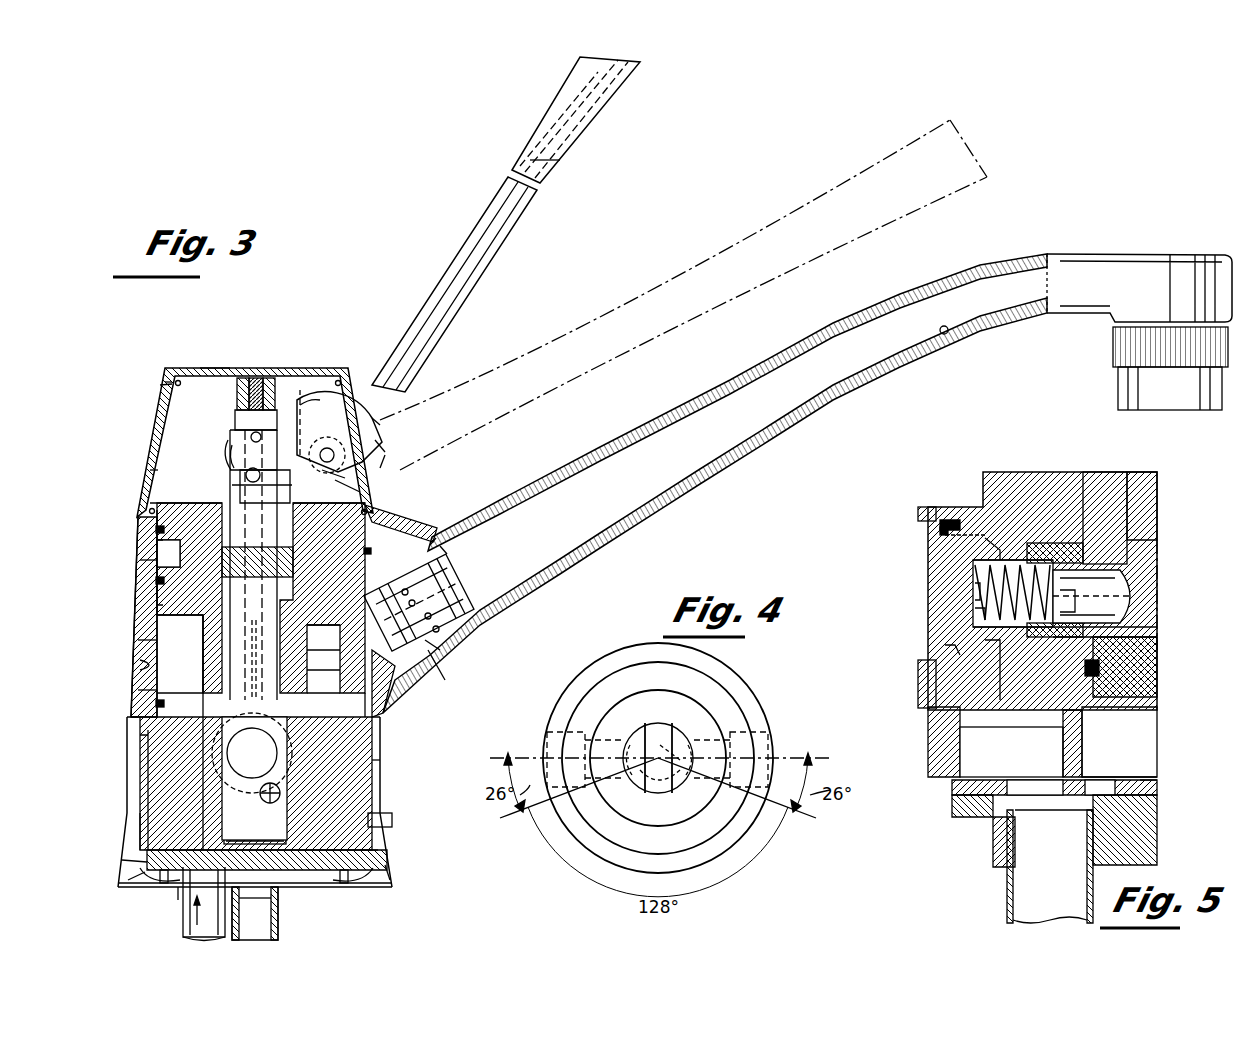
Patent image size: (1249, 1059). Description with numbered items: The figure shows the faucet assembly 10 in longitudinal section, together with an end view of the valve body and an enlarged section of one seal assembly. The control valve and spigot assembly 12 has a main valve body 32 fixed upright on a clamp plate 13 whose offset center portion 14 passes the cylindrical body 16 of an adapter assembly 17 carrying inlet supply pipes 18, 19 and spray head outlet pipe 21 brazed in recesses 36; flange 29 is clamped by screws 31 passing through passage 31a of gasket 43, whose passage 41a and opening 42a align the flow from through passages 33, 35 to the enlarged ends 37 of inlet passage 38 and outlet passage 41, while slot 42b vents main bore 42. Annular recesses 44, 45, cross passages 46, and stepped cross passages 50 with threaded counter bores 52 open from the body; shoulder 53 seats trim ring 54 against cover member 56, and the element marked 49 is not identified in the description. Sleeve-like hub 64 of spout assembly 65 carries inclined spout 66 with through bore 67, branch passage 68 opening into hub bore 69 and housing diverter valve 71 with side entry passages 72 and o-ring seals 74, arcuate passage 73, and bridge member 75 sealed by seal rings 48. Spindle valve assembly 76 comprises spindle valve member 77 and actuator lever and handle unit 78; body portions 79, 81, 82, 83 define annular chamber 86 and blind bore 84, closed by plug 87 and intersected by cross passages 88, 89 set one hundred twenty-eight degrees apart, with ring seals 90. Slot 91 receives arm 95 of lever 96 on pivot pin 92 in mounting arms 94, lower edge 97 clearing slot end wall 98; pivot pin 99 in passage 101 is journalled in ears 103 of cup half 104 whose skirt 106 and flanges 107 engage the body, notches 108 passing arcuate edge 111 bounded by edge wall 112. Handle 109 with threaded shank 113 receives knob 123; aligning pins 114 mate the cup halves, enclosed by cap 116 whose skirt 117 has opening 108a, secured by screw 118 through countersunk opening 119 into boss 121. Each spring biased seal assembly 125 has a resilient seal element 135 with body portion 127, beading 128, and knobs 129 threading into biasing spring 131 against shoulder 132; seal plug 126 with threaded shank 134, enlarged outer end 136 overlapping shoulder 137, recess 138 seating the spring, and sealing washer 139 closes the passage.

In FIG. 3, the faucet assembly 10 is at (125, 498).
In FIG. 3, the control valve and spigot assembly 12 is at (126, 626).
In FIG. 3, the clamp plate 13 is at (132, 886).
In FIG. 3, the upwardly offset cylindrical center portion 14 is at (380, 860).
In FIG. 3, the depending cylindrical body 16 is at (180, 900).
In FIG. 5, the depending cylindrical body 16 is at (1145, 832).
In FIG. 3, the adapter assembly 17 is at (204, 902).
In FIG. 5, the inlet supply pipe 18 is at (1005, 905).
In FIG. 3, the inlet supply pipe 19 is at (255, 913).
In FIG. 3, the spray head outlet supply pipe 21 is at (190, 940).
In FIG. 5, the peripheral flange 29 is at (955, 812).
In FIG. 3, the securing screws 31 is at (164, 886).
In FIG. 5, the gasket screw passage 31a is at (1028, 782).
In FIG. 3, the main valve body 32 is at (380, 742).
In FIG. 4, the main valve body 32 is at (748, 690).
In FIG. 5, the main valve body 32 is at (996, 462).
In FIG. 5, the through passage 33 is at (1030, 805).
In FIG. 3, the third through passage 35 is at (126, 878).
In FIG. 3, the end opening cylindrical recesses 36 is at (248, 905).
In FIG. 5, the end opening cylindrical recesses 36 is at (1000, 870).
In FIG. 5, the lower enlarged ends 37 is at (975, 750).
In FIG. 5, the inlet passage 38 is at (930, 713).
In FIG. 3, the outlet passage 41 is at (200, 781).
In FIG. 3, the gasket outlet passage 41a is at (138, 832).
In FIG. 3, the main through bore 42 is at (296, 655).
In FIG. 5, the main through bore 42 is at (1085, 728).
In FIG. 3, the gasket bore passage 42a is at (255, 868).
In FIG. 5, the gasket bore passage 42a is at (1120, 782).
In FIG. 3, the slot 42b is at (140, 858).
In FIG. 5, the slot 42b is at (1150, 787).
In FIG. 3, the sealing gasket 43 is at (382, 850).
In FIG. 5, the sealing gasket 43 is at (958, 788).
In FIG. 3, the annular recess 44 is at (138, 665).
In FIG. 3, the annular recess 45 is at (132, 560).
In FIG. 3, the cross passages 46 is at (220, 590).
In FIG. 3, the seal rings 48 is at (138, 527).
In FIG. 3, the grooves 49 is at (132, 540).
In FIG. 4, the stepped cross passages 50 is at (755, 726).
In FIG. 5, the stepped cross passages 50 is at (1100, 620).
In FIG. 5, the threaded counter bores 52 is at (942, 520).
In FIG. 3, the upwardly facing shoulder 53 is at (140, 748).
In FIG. 3, the annular brass trim ring 54 is at (382, 768).
In FIG. 3, the cover member 56 is at (392, 832).
In FIG. 3, the sleeve-like hub 64 is at (132, 640).
In FIG. 3, the discharge spout assembly 65 is at (478, 651).
In FIG. 3, the discharge spout 66 is at (878, 362).
In FIG. 3, the through bore 67 is at (948, 334).
In FIG. 3, the branch passage 68 is at (392, 690).
In FIG. 3, the hub through bore 69 is at (136, 690).
In FIG. 3, the diverter valve 71 is at (436, 655).
In FIG. 3, the side entry passages 72 is at (432, 660).
In FIG. 3, the arcuate passage 73 is at (420, 528).
In FIG. 3, the o-ring seals 74 is at (490, 630).
In FIG. 3, the arcuate bridge member 75 is at (445, 552).
In FIG. 3, the spindle valve assembly 76 is at (198, 640).
In FIG. 3, the spindle valve member 77 is at (228, 460).
In FIG. 5, the spindle valve member 77 is at (1100, 470).
In FIG. 3, the actuator lever and handle unit 78 is at (298, 382).
In FIG. 3, the major diameter body portion 79 is at (252, 753).
In FIG. 5, the major diameter body portion 79 is at (1148, 497).
In FIG. 3, the reduced diameter body portion 81 is at (254, 660).
In FIG. 3, the short major diameter body portion 82 is at (238, 545).
In FIG. 3, the elongated reduced diameter portion 83 is at (292, 565).
In FIG. 3, the coaxial blind bore 84 is at (296, 635).
In FIG. 4, the coaxial blind bore 84 is at (670, 735).
In FIG. 5, the coaxial blind bore 84 is at (1148, 530).
In FIG. 3, the annular chamber 86 is at (296, 675).
In FIG. 5, the closure plug 87 is at (1148, 648).
In FIG. 3, the cross passage 88 is at (283, 793).
In FIG. 4, the cross passage 88 is at (660, 790).
In FIG. 4, the cross passage 89 is at (680, 780).
In FIG. 3, the ring seals 90 is at (222, 568).
In FIG. 5, the ring seals 90 is at (1105, 668).
In FIG. 4, the slot 91 is at (648, 732).
In FIG. 3, the pivot pin 92 is at (246, 476).
In FIG. 3, the mounting arms 94 is at (230, 452).
In FIG. 4, the mounting arms 94 is at (632, 745).
In FIG. 3, the arm 95 is at (232, 486).
In FIG. 3, the lever 96 is at (385, 448).
In FIG. 3, the planar lower edge 97 is at (322, 598).
In FIG. 3, the slot end wall 98 is at (257, 427).
In FIG. 3, the pivot pin 99 is at (327, 448).
In FIG. 3, the transverse through passage 101 is at (348, 475).
In FIG. 3, the ears 103 is at (365, 492).
In FIG. 3, the cup half 104 is at (162, 410).
In FIG. 3, the skirt 106 is at (170, 420).
In FIG. 3, the inturned arcuate flanges 107 is at (150, 470).
In FIG. 3, the side wall notches 108 is at (350, 395).
In FIG. 3, the side wall opening 108a is at (418, 512).
In FIG. 3, the operating handle 109 is at (508, 232).
In FIG. 3, the upper arcuate edge 111 is at (380, 408).
In FIG. 3, the inclined edge wall 112 is at (393, 452).
In FIG. 3, the threaded shank 113 is at (560, 148).
In FIG. 3, the aligning pins 114 is at (178, 380).
In FIG. 3, the inverted cap 116 is at (228, 362).
In FIG. 3, the annular skirt 117 is at (160, 380).
In FIG. 3, the headed screw 118 is at (268, 376).
In FIG. 3, the countersunk opening 119 is at (258, 375).
In FIG. 3, the cylindrical boss 121 is at (237, 398).
In FIG. 3, the hand knob 123 is at (595, 110).
In FIG. 5, the spring biased seal assembly 125 is at (975, 572).
In FIG. 5, the seal plug 126 is at (940, 555).
In FIG. 5, the cylindrical body portion 127 is at (1085, 584).
In FIG. 5, the annular beading 128 is at (1020, 650).
In FIG. 5, the knobs 129 is at (1030, 560).
In FIG. 5, the biasing spring 131 is at (978, 612).
In FIG. 5, the annular shoulder 132 is at (1071, 603).
In FIG. 5, the threaded shank 134 is at (945, 648).
In FIG. 5, the resilient seal element 135 is at (1085, 555).
In FIG. 5, the increased diameter outer end 136 is at (938, 530).
In FIG. 5, the outwardly facing shoulder 137 is at (918, 676).
In FIG. 5, the annular recess 138 is at (975, 595).
In FIG. 5, the sealing washers 139 is at (935, 510).